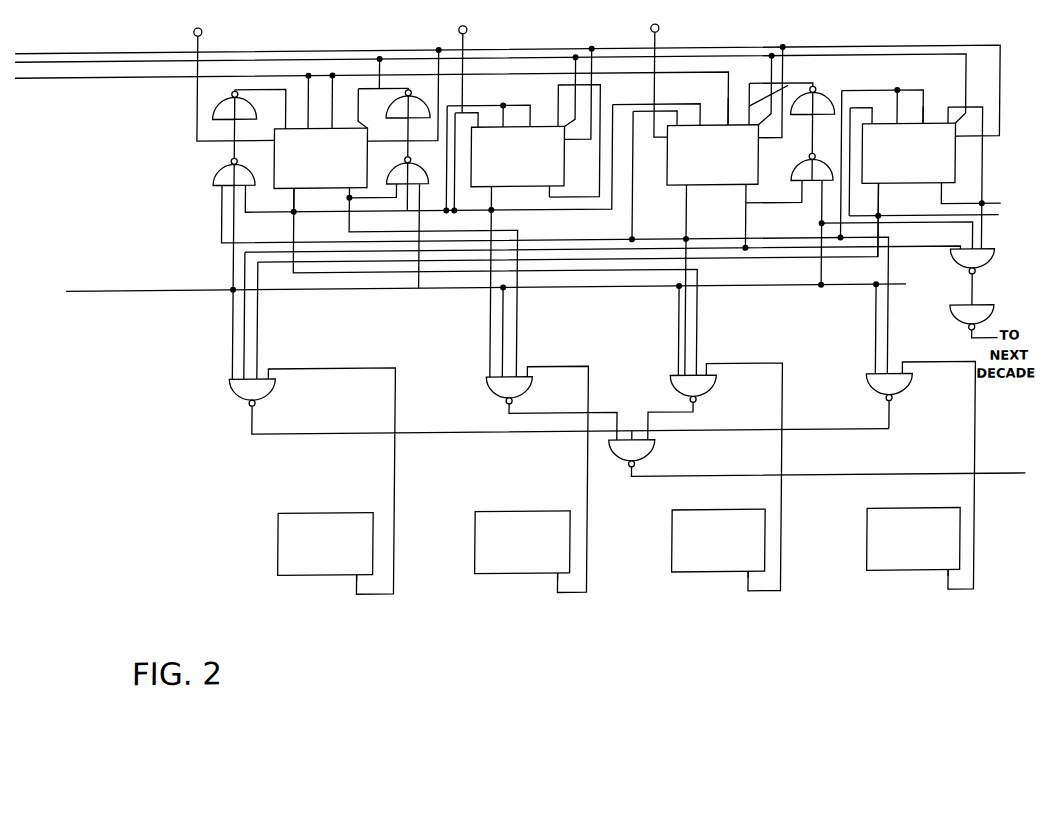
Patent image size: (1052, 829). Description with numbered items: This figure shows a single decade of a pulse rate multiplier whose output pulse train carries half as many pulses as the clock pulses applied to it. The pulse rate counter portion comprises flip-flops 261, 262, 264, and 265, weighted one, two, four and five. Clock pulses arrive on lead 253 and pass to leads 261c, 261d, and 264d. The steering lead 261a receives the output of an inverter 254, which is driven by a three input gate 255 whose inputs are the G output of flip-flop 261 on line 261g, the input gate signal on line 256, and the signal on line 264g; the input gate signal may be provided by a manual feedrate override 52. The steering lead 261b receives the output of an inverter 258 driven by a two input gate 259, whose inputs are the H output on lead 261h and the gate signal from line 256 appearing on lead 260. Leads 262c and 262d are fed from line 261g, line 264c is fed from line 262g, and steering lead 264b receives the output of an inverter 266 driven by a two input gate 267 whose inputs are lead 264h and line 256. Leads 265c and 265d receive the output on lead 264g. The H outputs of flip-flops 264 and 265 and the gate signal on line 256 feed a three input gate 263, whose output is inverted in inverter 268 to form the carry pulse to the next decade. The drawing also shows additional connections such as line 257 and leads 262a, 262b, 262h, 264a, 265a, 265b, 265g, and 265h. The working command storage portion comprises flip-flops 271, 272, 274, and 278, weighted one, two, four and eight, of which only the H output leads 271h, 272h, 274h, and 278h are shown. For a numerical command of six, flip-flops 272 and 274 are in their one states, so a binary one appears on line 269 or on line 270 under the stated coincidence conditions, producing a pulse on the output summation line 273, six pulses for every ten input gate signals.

The manual feedrate override 52 is at (60, 286).
The lead 253 is at (90, 78).
The inverter 254 is at (212, 102).
The three input gate 255 is at (213, 168).
The line 256 is at (175, 289).
The line 257 is at (236, 229).
The inverter 258 is at (414, 115).
The two input gate 259 is at (394, 167).
The lead 260 is at (421, 202).
The flip-flop 261 is at (321, 158).
The steering lead 261a is at (287, 86).
The steering lead 261b is at (360, 95).
The lead 261c is at (309, 73).
The lead 261d is at (334, 72).
The line 261g is at (270, 200).
The lead 261h is at (410, 281).
The flip-flop 262 is at (518, 156).
The input A of counter 262 262a is at (462, 70).
The input B of counter 262 262b is at (599, 101).
The lead 262c is at (501, 105).
The lead 262d is at (573, 60).
The line 262g is at (513, 281).
The output H of counter 262 262h is at (553, 204).
The three input gate 263 is at (983, 256).
The flip-flop 264 is at (713, 155).
The input A of counter 264 264a is at (636, 190).
The steering lead 264b is at (786, 88).
The line 264c is at (706, 95).
The lead 264d is at (729, 95).
The line 264g is at (689, 198).
The lead 264h is at (749, 198).
The flip-flop 265 is at (909, 153).
The input A of counter 265 265a is at (851, 109).
The input B of counter 265 265b is at (958, 110).
The lead 265c is at (898, 108).
The lead 265d is at (923, 110).
The output G of counter 265 265g is at (924, 219).
The output H of counter 265 265h is at (944, 199).
The inverter 266 is at (813, 92).
The two input gate 267 is at (804, 163).
The inverter 268 is at (987, 308).
The line 269 is at (551, 405).
The line 270 is at (699, 403).
The flip-flop 271 is at (326, 544).
The H output lead 271h is at (397, 562).
The flip-flop 272 is at (523, 542).
The H output lead 272h is at (590, 562).
The output summation line 273 is at (928, 476).
The flip-flop 274 is at (719, 540).
The H output lead 274h is at (785, 562).
The flip-flop 278 is at (914, 538).
The H output lead 278h is at (978, 562).